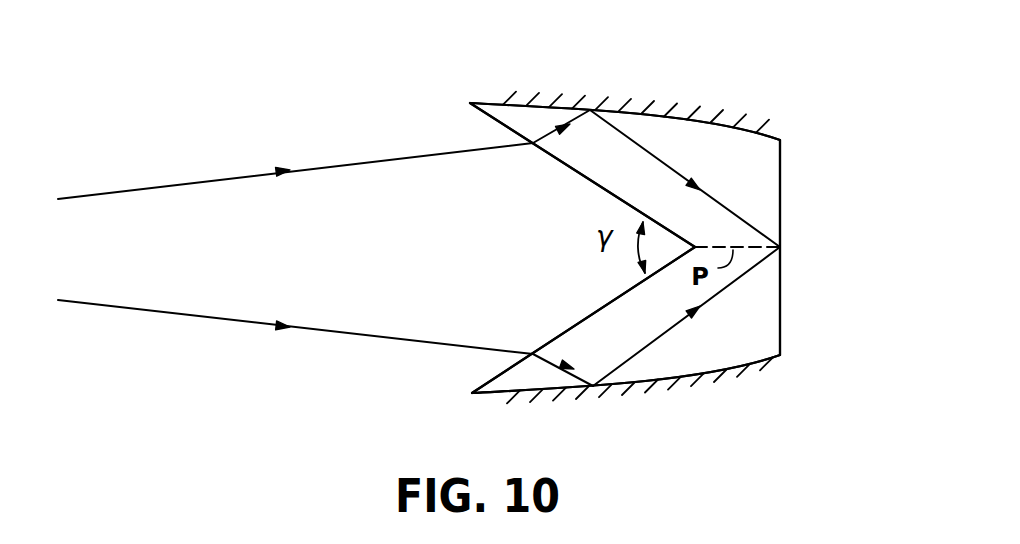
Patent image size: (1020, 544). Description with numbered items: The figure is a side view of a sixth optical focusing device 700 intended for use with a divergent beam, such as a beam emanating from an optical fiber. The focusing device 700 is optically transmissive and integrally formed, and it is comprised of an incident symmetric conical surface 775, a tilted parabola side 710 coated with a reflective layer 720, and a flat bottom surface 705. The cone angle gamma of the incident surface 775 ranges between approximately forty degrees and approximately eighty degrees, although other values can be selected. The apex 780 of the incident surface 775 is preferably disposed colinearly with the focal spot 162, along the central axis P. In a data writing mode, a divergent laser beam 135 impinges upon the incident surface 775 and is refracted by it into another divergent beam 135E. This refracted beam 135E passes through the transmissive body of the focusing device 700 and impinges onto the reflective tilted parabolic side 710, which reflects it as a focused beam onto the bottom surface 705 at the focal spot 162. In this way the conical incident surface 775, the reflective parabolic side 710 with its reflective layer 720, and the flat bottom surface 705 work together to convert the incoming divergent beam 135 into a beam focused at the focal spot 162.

The divergent laser beam 135 is at (185, 183).
The divergent beam 135E is at (552, 137).
The focusing device 700 is at (688, 46).
The tilted parabola side 710 is at (713, 118).
The reflective layer 720 is at (716, 375).
The flat bottom surface 705 is at (780, 323).
The incident symmetric conical surface 775 is at (570, 330).
The apex 780 is at (698, 245).
The focal spot 162 is at (780, 247).